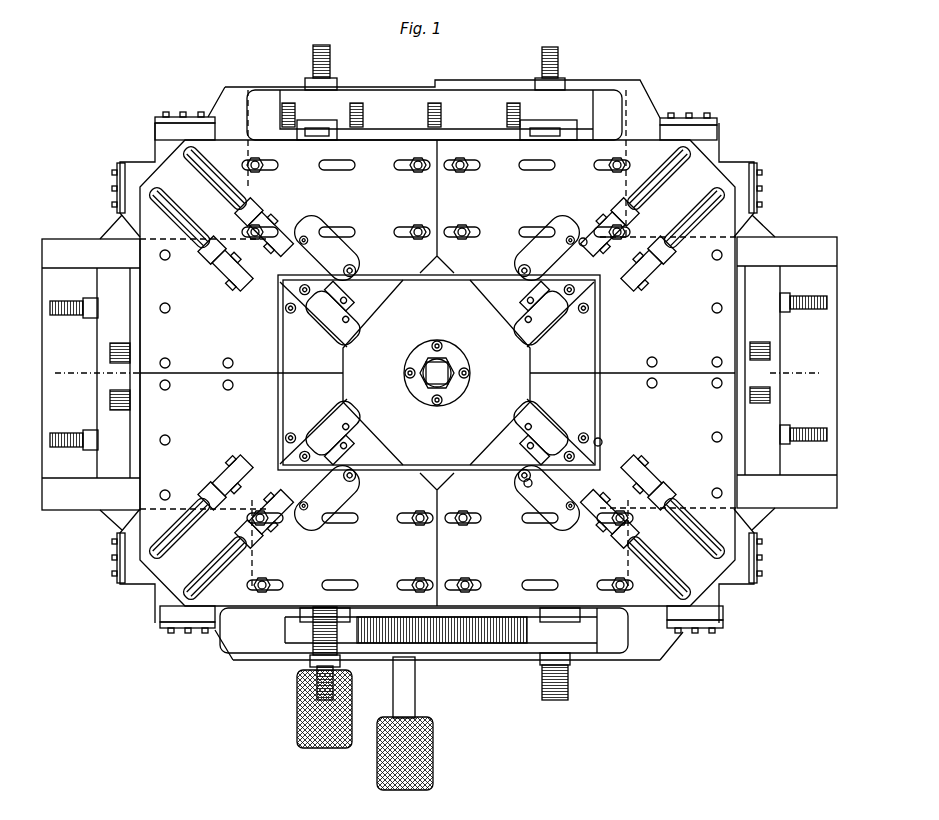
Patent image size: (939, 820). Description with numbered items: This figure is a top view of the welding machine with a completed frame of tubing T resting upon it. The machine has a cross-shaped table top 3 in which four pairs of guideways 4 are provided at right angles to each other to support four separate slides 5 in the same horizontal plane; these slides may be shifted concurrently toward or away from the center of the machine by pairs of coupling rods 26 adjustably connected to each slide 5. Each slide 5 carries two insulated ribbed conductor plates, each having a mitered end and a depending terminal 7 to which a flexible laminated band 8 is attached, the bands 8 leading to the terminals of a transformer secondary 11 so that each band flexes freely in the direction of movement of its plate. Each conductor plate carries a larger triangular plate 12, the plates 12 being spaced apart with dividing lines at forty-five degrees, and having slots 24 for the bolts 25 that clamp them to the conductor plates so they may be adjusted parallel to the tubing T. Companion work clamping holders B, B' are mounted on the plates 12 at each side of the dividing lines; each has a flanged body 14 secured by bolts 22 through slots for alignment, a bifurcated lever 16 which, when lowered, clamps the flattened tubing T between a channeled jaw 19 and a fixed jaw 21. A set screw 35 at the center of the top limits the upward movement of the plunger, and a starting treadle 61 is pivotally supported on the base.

The table top 3 is at (800, 478).
The guideways 4 is at (280, 140).
The slides 5 is at (480, 662).
The depending terminal 7 is at (156, 143).
The flexible laminated band 8 is at (165, 117).
The secondary 11 is at (439, 340).
The plate 12 is at (437, 373).
The flanged body 14 is at (565, 343).
The bifurcated lever 16 is at (685, 218).
The channeled jaw 19 is at (579, 246).
The fixed jaw 21 is at (603, 447).
The bolts 22 is at (524, 485).
The slots 24 is at (532, 165).
The bolts 25 is at (437, 375).
The coupling rods 26 is at (808, 428).
The set screw 35 is at (448, 367).
The treadle 61 is at (296, 735).
The clamping holder B is at (432, 374).
The clamping holder B' is at (433, 373).
The tubing T is at (433, 283).